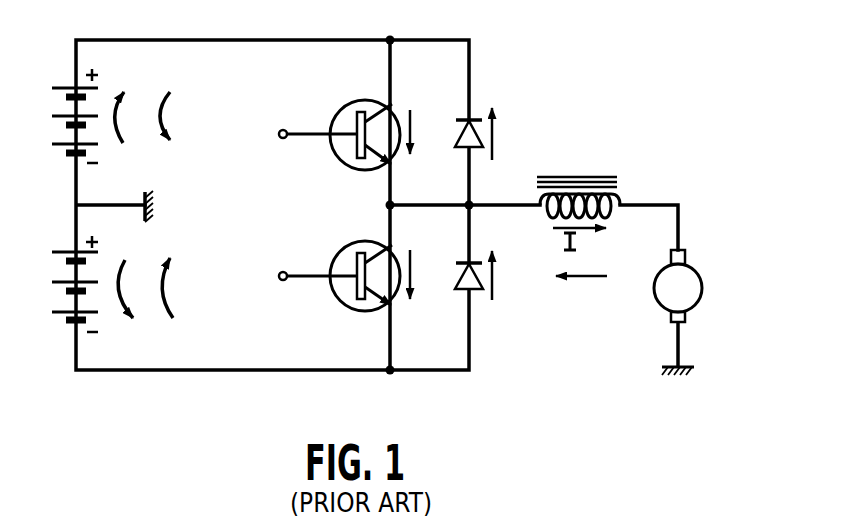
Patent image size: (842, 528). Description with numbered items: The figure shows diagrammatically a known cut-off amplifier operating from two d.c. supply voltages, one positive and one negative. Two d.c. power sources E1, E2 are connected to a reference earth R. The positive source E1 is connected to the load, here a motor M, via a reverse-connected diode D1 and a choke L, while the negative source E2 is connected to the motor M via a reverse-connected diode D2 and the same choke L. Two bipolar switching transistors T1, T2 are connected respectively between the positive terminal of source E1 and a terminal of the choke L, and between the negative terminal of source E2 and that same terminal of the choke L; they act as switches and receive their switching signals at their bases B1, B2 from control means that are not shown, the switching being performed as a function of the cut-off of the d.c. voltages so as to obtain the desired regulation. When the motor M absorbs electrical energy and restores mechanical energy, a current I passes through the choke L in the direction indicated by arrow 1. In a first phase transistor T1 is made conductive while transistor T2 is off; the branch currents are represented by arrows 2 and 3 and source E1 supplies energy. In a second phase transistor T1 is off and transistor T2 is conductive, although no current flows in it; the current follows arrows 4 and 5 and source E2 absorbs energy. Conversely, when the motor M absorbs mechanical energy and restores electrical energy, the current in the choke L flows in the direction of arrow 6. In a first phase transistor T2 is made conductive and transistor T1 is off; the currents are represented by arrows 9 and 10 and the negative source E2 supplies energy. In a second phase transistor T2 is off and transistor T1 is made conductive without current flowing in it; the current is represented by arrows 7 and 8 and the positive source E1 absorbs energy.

The positive d.c. power source E1 is at (64, 82).
The negative d.c. power source E2 is at (64, 330).
The current arrow (first phase, motor absorbing electrical energy) 2 is at (118, 110).
The current arrow (second phase, motor restoring electrical energy) 7 is at (164, 112).
The current arrow (second phase, motor absorbing electrical energy) 4 is at (120, 292).
The current arrow (first phase, motor restoring electrical energy) 10 is at (170, 306).
The reference earth R is at (134, 204).
The first switching transistor T1 is at (356, 100).
The second switching transistor T2 is at (358, 310).
The base of transistor T1 B1 is at (312, 115).
The base of transistor T2 B2 is at (309, 259).
The current arrow (first phase, motor absorbing electrical energy) 3 is at (412, 114).
The current arrow (first phase, motor restoring electrical energy) 9 is at (412, 276).
The first reverse-connected diode D1 is at (472, 118).
The second reverse-connected diode D2 is at (477, 292).
The current arrow (second phase, motor restoring electrical energy) 8 is at (494, 138).
The current arrow (second phase, motor absorbing electrical energy) 5 is at (494, 278).
The choke L is at (628, 192).
The current direction arrow (motor absorbing electrical energy) 1 is at (590, 234).
The current direction arrow (motor restoring electrical energy) 6 is at (600, 278).
The motor M is at (667, 305).